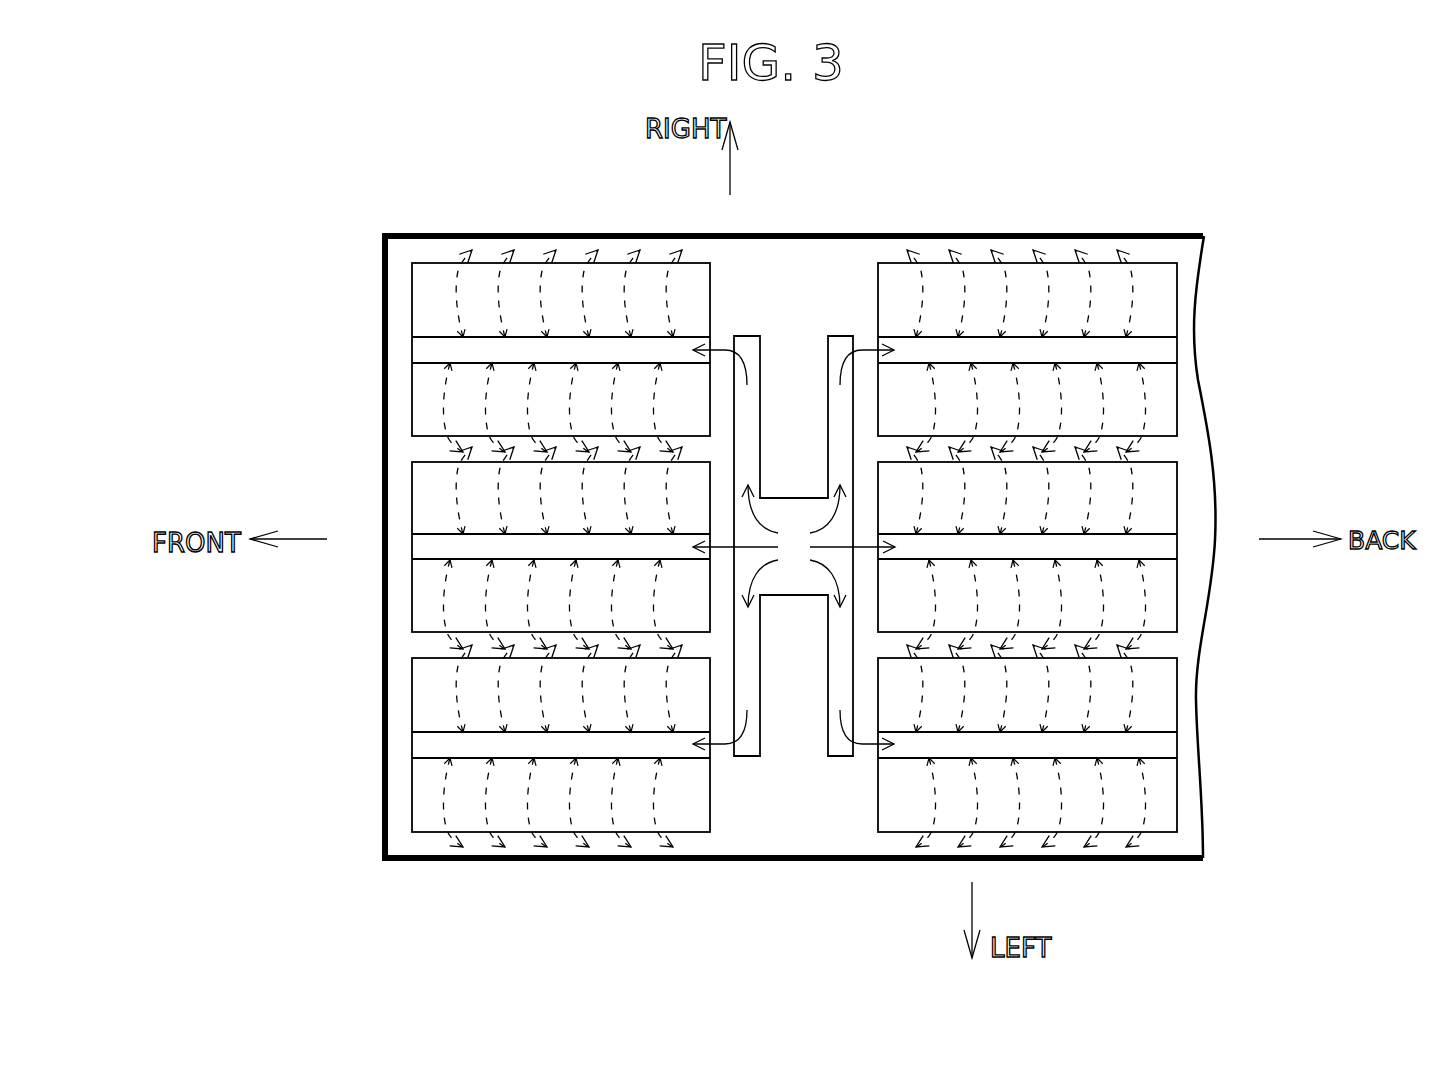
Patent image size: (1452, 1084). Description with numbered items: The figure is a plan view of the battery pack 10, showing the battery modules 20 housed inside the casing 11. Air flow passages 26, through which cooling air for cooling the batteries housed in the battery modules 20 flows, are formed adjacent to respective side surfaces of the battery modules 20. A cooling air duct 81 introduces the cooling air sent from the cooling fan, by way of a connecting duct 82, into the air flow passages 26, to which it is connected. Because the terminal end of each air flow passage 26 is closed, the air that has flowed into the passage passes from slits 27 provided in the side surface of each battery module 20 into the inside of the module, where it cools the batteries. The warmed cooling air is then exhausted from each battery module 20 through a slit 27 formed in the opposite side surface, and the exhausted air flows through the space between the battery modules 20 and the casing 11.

The battery pack 10 is at (897, 188).
The casing 11 is at (1013, 233).
The battery module 20 is at (410, 303).
The air flow passage 26 is at (428, 350).
The slit 27 is at (458, 264).
The cooling air duct 81 is at (788, 597).
The connecting duct 82 is at (722, 338).